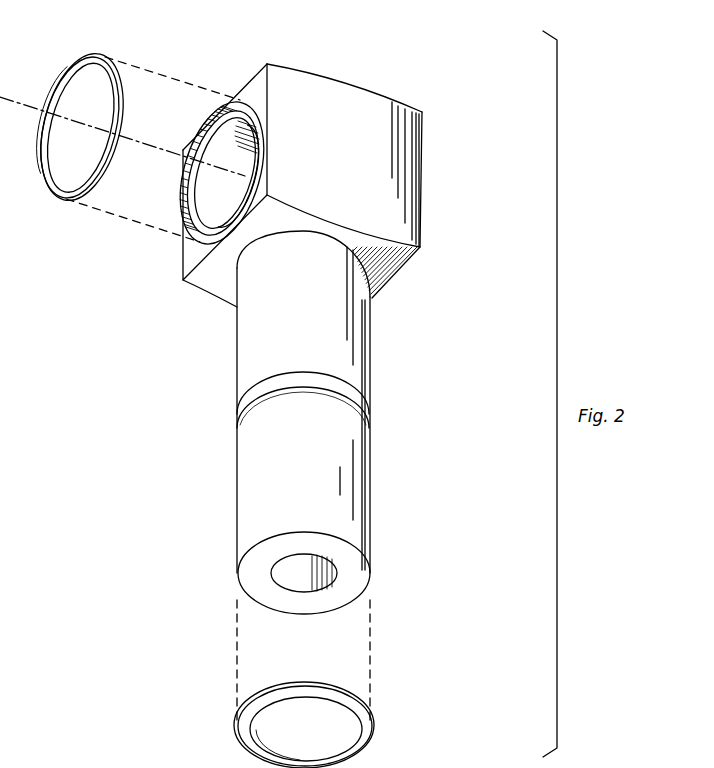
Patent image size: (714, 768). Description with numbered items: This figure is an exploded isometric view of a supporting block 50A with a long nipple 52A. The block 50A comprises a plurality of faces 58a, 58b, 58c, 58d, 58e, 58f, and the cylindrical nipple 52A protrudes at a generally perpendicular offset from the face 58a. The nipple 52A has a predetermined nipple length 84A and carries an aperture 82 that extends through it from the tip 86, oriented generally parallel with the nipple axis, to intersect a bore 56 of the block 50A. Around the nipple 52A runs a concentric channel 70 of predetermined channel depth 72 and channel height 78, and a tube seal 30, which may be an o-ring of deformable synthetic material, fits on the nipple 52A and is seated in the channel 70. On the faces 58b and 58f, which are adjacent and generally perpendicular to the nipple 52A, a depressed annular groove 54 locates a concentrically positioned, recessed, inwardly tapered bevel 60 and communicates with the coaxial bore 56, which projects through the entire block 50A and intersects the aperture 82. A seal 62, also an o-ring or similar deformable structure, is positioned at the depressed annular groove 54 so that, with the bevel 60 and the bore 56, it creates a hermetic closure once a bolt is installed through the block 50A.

The tube seal 30 is at (240, 724).
The block 50A is at (476, 148).
The nipple 52A is at (266, 541).
The depressed annular groove 54 is at (221, 127).
The bore 56 is at (213, 197).
The face 58a is at (371, 251).
The face 58b is at (255, 97).
The face 58c is at (367, 117).
The face 58d is at (180, 195).
The face 58e is at (303, 69).
The face 58f is at (425, 204).
The bevel 60 is at (190, 231).
The seal 62 is at (68, 92).
The channel 70 is at (250, 393).
The channel depth 72 is at (300, 408).
The channel height 78 is at (371, 410).
The aperture 82 is at (285, 572).
The nipple length 84A is at (167, 572).
The tip 86 is at (303, 600).